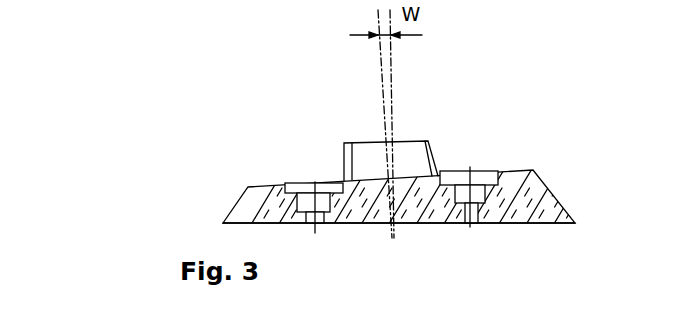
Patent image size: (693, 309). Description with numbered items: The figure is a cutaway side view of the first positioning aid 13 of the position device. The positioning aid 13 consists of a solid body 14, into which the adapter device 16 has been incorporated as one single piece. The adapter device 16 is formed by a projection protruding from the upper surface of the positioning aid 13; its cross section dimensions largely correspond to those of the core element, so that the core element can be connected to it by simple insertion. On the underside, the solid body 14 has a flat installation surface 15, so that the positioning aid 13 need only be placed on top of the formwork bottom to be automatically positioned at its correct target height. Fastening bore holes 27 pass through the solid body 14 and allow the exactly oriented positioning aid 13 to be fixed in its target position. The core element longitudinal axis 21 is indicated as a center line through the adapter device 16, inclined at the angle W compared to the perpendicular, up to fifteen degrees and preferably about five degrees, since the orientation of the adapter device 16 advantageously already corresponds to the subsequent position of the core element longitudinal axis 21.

The first positioning aid 13 is at (564, 185).
The solid body 14 is at (268, 208).
The flat installation surface 15 is at (486, 230).
The adapter device 16 is at (417, 157).
The core element longitudinal axis 21 is at (378, 53).
The fastening bore holes 27 is at (480, 186).